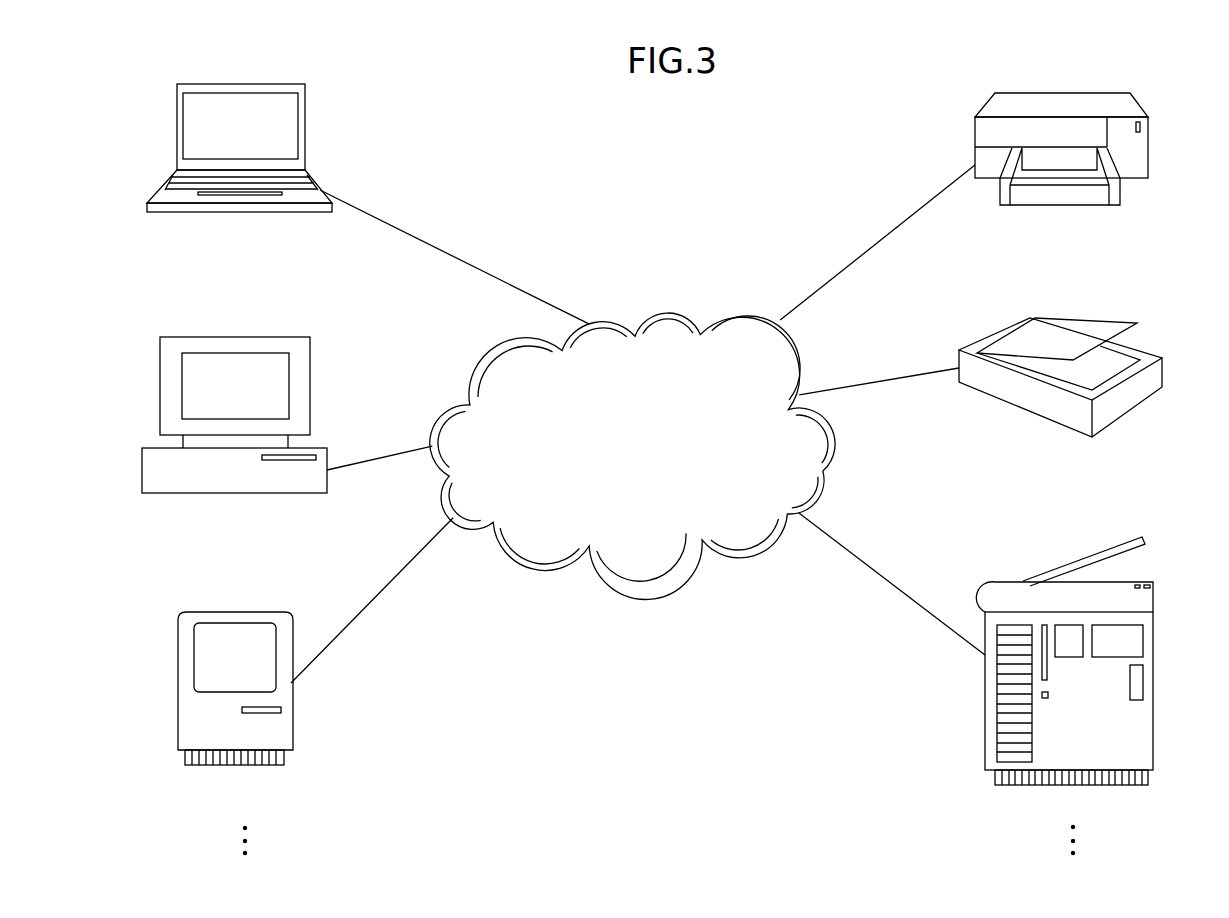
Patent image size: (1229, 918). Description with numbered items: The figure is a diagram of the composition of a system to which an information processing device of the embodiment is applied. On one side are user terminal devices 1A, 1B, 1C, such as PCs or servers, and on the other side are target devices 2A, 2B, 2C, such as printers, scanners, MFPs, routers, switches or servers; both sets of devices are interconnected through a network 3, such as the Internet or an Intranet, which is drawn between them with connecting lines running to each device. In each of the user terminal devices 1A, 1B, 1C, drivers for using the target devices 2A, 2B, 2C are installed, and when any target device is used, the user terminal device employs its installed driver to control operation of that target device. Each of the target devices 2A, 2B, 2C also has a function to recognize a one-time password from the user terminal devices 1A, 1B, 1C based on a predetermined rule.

The user terminal device 1A is at (177, 128).
The user terminal device 1B is at (160, 378).
The user terminal device 1C is at (178, 644).
The network 3 is at (675, 313).
The target device 2A is at (1140, 110).
The target device 2B is at (1130, 350).
The target device 2C is at (1153, 606).